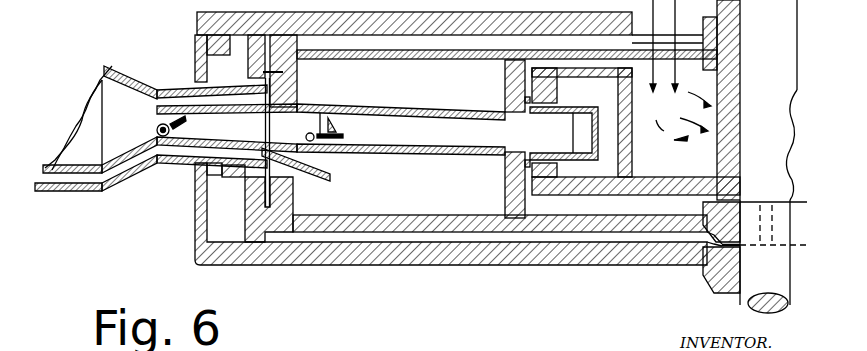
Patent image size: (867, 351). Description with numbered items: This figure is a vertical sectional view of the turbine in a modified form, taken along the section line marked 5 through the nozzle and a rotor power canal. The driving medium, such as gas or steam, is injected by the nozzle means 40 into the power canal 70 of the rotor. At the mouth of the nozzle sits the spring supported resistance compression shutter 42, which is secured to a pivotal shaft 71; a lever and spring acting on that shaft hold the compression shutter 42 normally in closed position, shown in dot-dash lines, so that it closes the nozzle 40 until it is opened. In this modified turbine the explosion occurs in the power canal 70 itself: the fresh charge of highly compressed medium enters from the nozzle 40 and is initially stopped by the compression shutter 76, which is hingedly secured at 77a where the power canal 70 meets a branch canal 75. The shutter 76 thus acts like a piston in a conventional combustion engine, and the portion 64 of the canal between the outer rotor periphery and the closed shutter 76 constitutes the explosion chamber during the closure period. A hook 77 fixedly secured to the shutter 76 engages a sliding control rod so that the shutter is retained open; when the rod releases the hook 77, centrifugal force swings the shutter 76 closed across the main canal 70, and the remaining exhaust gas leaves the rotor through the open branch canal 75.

The section line 5- 5 is at (118, 125).
The nozzle means 40 is at (242, 142).
The compression shutter 42 is at (187, 125).
The portion of the power canals 64 is at (301, 108).
The power canal 70 is at (413, 100).
The pivotal shaft 71 is at (141, 170).
The branch canal 75 is at (303, 178).
The compression shutter 76 is at (288, 121).
The hook 77 is at (344, 127).
The hinge 77a is at (323, 168).